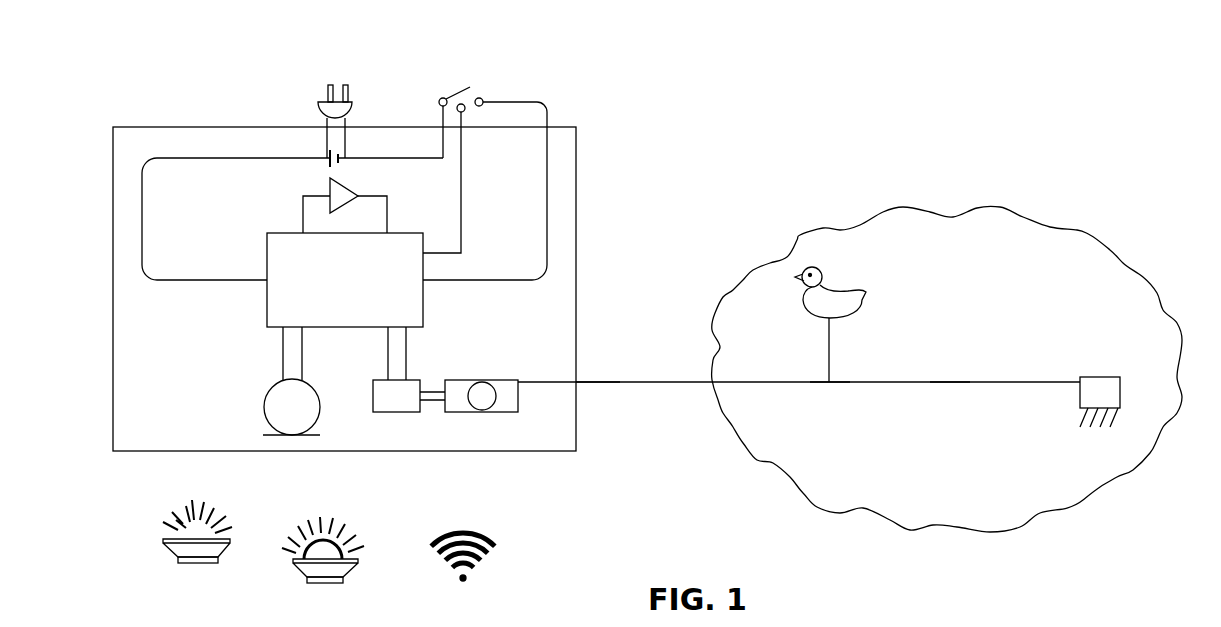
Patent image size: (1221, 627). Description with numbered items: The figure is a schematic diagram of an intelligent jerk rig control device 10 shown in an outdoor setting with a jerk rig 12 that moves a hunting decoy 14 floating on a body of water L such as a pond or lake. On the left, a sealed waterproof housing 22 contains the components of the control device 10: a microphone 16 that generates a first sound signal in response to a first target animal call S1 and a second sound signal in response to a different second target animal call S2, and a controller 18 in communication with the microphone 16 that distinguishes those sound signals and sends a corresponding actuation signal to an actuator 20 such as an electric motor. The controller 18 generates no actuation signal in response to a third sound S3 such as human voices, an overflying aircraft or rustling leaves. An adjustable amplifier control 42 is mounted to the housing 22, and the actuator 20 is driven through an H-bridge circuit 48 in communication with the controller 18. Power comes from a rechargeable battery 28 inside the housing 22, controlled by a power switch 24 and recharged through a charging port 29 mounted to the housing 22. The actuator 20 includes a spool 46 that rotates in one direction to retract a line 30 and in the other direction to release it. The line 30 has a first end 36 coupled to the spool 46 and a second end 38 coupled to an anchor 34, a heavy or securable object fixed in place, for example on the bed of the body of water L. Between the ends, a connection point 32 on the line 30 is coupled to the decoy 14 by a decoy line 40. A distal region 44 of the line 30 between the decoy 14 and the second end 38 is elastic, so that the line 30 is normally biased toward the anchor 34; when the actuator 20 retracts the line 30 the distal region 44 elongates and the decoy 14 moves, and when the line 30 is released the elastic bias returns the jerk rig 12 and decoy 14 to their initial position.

The intelligent jerk rig control device 10 is at (1022, 122).
The jerk rig 12 is at (1055, 463).
The decoy 14 is at (822, 266).
The microphone 16 is at (268, 392).
The controller 18 is at (265, 318).
The actuator 20 is at (497, 413).
The housing 22 is at (113, 280).
The power switch 24 is at (473, 72).
The rechargeable battery 28 is at (328, 156).
The charging port 29 is at (325, 101).
The line 30 is at (955, 382).
The connection point 32 is at (830, 392).
The anchor 34 is at (1095, 377).
The first end 36 is at (580, 386).
The second end 38 is at (1087, 365).
The decoy line 40 is at (831, 362).
The adjustable amplifier control 42 is at (356, 187).
The distal region 44 is at (955, 397).
The spool 46 is at (482, 408).
The H-bridge circuit 48 is at (410, 405).
The body of water L is at (1080, 230).
The first target animal call S1 is at (165, 507).
The second target animal call S2 is at (305, 517).
The third sound S3 is at (445, 527).